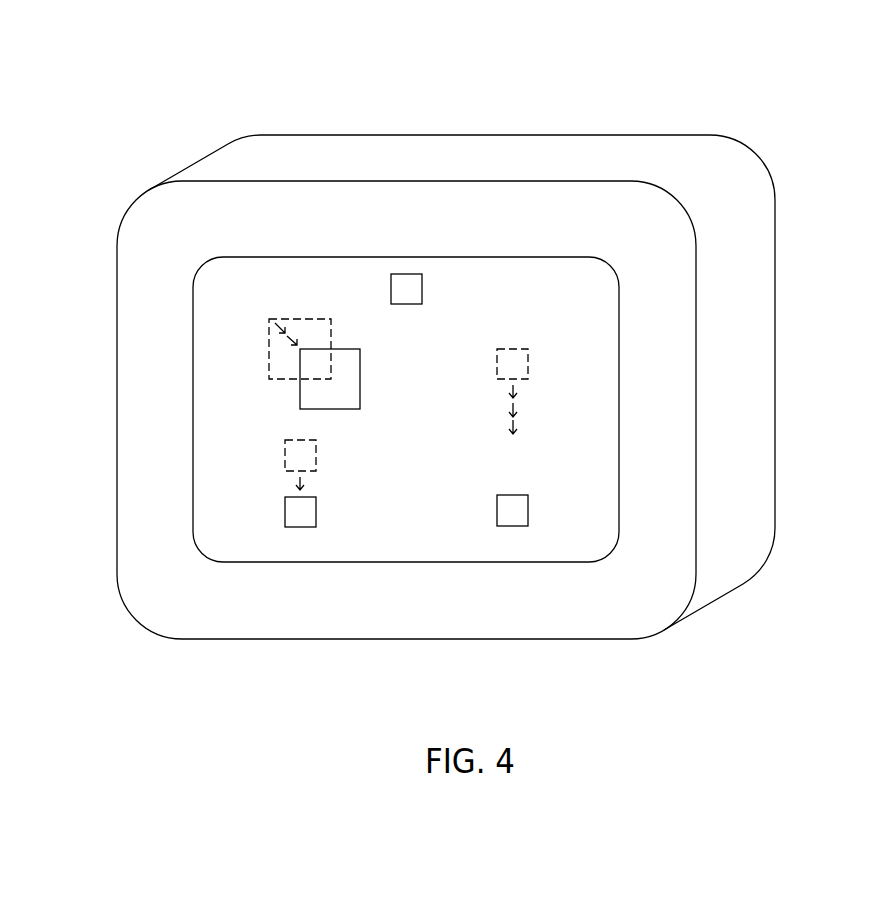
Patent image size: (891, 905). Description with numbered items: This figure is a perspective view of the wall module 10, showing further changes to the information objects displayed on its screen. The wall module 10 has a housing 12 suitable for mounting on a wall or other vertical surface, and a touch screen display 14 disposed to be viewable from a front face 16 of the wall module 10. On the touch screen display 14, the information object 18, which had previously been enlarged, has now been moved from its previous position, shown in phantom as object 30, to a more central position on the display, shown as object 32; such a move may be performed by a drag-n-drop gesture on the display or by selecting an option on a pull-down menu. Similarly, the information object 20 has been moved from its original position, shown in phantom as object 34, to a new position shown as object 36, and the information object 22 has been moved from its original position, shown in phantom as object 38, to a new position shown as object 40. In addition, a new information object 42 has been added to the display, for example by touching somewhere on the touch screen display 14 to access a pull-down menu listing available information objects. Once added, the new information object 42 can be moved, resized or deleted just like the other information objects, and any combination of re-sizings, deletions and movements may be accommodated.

The wall module 10 is at (316, 80).
The housing 12 is at (598, 150).
The touch screen display 14 is at (562, 296).
The front face 16 is at (668, 488).
The information object 18 is at (308, 305).
The information object 20 is at (268, 482).
The information object 22 is at (545, 378).
The object 30 is at (283, 380).
The object 32 is at (360, 377).
The object 34 is at (316, 455).
The object 36 is at (316, 508).
The object 38 is at (513, 349).
The object 40 is at (515, 495).
The new information object 42 is at (409, 274).